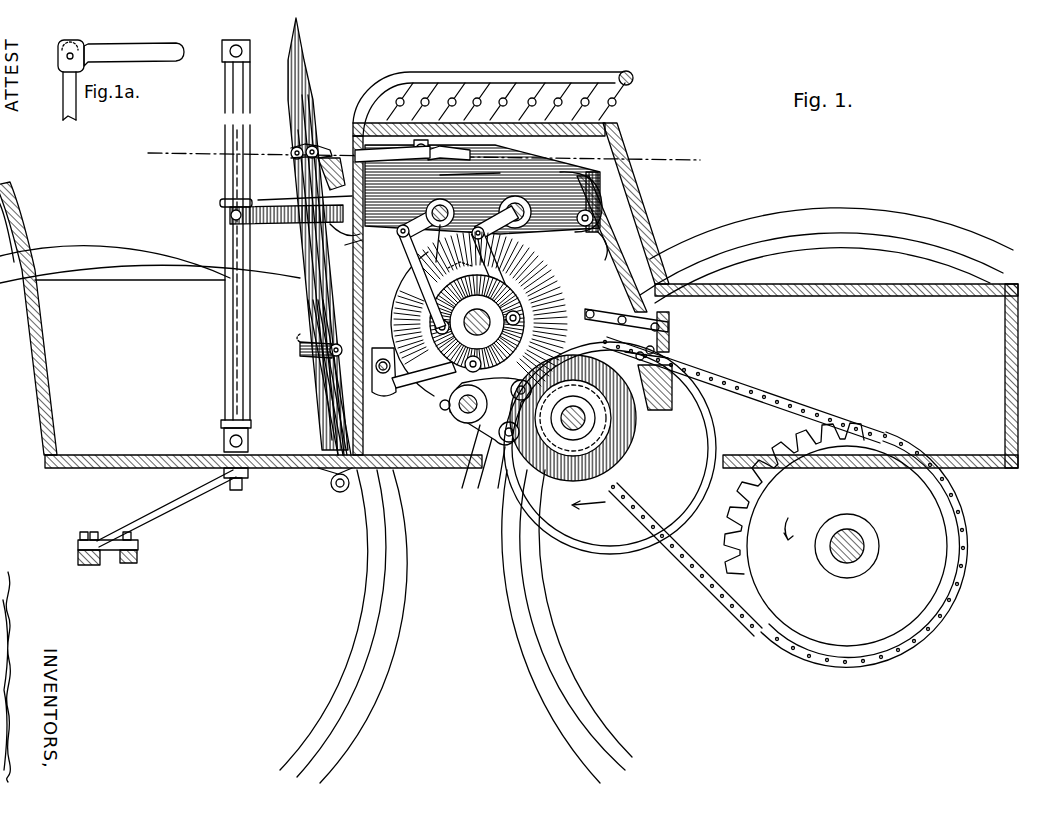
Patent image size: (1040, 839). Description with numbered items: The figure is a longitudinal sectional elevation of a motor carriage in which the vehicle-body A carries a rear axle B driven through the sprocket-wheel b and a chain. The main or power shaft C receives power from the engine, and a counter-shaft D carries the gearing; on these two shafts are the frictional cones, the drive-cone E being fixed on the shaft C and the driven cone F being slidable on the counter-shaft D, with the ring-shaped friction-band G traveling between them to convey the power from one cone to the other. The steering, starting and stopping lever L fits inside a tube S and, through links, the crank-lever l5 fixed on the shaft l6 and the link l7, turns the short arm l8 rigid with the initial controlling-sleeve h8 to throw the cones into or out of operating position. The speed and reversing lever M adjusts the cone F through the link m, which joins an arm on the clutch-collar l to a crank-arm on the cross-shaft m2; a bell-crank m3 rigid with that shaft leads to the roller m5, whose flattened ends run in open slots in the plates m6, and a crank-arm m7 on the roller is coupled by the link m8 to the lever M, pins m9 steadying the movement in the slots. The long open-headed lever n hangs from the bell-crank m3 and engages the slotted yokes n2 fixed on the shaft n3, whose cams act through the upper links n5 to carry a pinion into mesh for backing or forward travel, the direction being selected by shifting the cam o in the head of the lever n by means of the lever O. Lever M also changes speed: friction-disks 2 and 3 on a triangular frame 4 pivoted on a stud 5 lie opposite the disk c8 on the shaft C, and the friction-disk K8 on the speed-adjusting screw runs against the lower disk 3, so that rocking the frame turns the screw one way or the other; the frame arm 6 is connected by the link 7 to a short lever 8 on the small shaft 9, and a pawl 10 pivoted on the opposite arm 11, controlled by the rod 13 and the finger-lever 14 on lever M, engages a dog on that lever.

In FIG. 1, the vehicle-body A is at (1005, 388).
In FIG. 1, the rear axle B is at (864, 546).
In FIG. 1, the main or power shaft C is at (596, 422).
In FIG. 1, the friction-disk c8 is at (600, 440).
In FIG. 1, the counter-shaft D is at (436, 328).
In FIG. 1, the drive-cone E is at (625, 478).
In FIG. 1, the driven cone F is at (560, 282).
In FIG. 1, the friction-band G is at (700, 486).
In FIG. 1, the friction-disk K8 is at (452, 420).
In FIG. 1A, the steering, starting, and stopping lever L is at (62, 88).
In FIG. 1, the steering, starting, and stopping lever L is at (244, 88).
In FIG. 1, the speed and reversing lever M is at (308, 84).
In FIG. 1, the lever O is at (608, 145).
In FIG. 1A, the tube S is at (143, 48).
In FIG. 1, the tube S is at (250, 49).
In FIG. 1, the sprocket-wheel b is at (796, 445).
In FIG. 1, the clutch-collar l is at (476, 252).
In FIG. 1, the crank-lever l5 is at (473, 160).
In FIG. 1, the shaft l6 is at (440, 232).
In FIG. 1, the link l7 is at (416, 256).
In FIG. 1, the short arm l8 is at (445, 313).
In FIG. 1, the initial controlling-sleeve h8 is at (452, 270).
In FIG. 1, the link m is at (540, 250).
In FIG. 1, the cross-shaft m2 is at (517, 196).
In FIG. 1, the bell-crank m3 is at (562, 190).
In FIG. 1, the roller m5 is at (410, 160).
In FIG. 1, the plates m6 is at (497, 150).
In FIG. 1, the crank-arm m7 is at (438, 160).
In FIG. 1, the link m8 is at (333, 150).
In FIG. 1, the pins m9 is at (421, 140).
In FIG. 1, the long open-headed lever n is at (604, 236).
In FIG. 1, the segmentally-slotted yokes n2 is at (670, 328).
In FIG. 1, the shaft n3 is at (646, 357).
In FIG. 1, the upper links n5 is at (640, 310).
In FIG. 1, the cam o is at (595, 215).
In FIG. 1, the friction-disk 2 is at (421, 322).
In FIG. 1, the friction-disk 3 is at (499, 474).
In FIG. 1, the triangular frame 4 is at (467, 463).
In FIG. 1, the stud 5 is at (440, 406).
In FIG. 1, the arm 6 is at (430, 385).
In FIG. 1, the link 7 is at (386, 392).
In FIG. 1, the short lever 8 is at (340, 398).
In FIG. 1, the small shaft or stem 9 is at (336, 385).
In FIG. 1, the pawl 10 is at (328, 360).
In FIG. 1, the short arm 11 is at (332, 372).
In FIG. 1, the rod 13 is at (318, 291).
In FIG. 1, the finger-lever 14 is at (291, 140).